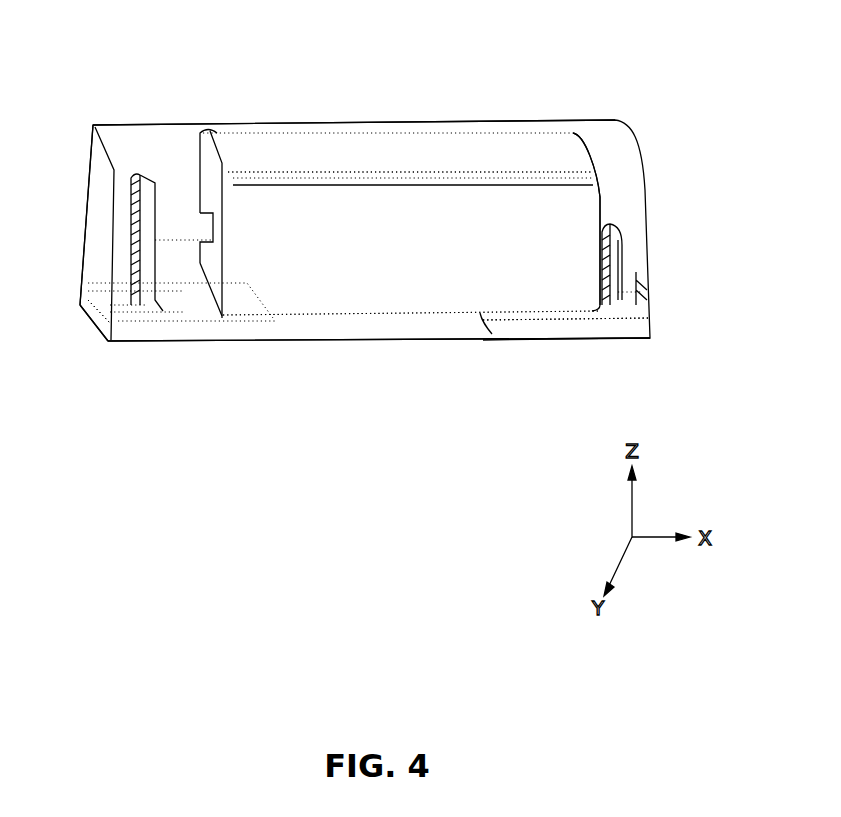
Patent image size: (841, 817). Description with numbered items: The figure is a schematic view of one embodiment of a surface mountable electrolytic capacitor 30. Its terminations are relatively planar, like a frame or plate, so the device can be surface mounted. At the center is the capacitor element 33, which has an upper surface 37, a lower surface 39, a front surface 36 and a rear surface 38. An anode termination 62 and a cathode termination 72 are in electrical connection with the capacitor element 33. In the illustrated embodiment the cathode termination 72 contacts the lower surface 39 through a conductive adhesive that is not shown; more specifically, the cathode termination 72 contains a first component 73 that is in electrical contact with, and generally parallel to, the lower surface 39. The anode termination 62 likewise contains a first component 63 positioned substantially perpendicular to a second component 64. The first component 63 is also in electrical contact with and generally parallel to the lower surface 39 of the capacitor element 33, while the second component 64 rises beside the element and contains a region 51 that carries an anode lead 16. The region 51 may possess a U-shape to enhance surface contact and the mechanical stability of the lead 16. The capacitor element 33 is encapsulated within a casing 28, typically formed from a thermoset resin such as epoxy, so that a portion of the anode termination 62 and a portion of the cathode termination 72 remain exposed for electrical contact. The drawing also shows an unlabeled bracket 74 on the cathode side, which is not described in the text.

The anode lead 16 is at (183, 234).
The casing 28 is at (124, 128).
The surface mountable electrolytic capacitor 30 is at (445, 96).
The capacitor element 33 is at (391, 258).
The front surface 36 is at (210, 168).
The upper surface 37 is at (465, 160).
The rear surface 38 is at (598, 197).
The lower surface 39 is at (388, 317).
The region 51 is at (157, 216).
The anode termination 62 is at (182, 346).
The first component 63 is at (128, 337).
The second component 64 is at (115, 248).
The cathode termination 72 is at (585, 342).
The first component 73 is at (518, 334).
The right bracket 74 is at (617, 262).